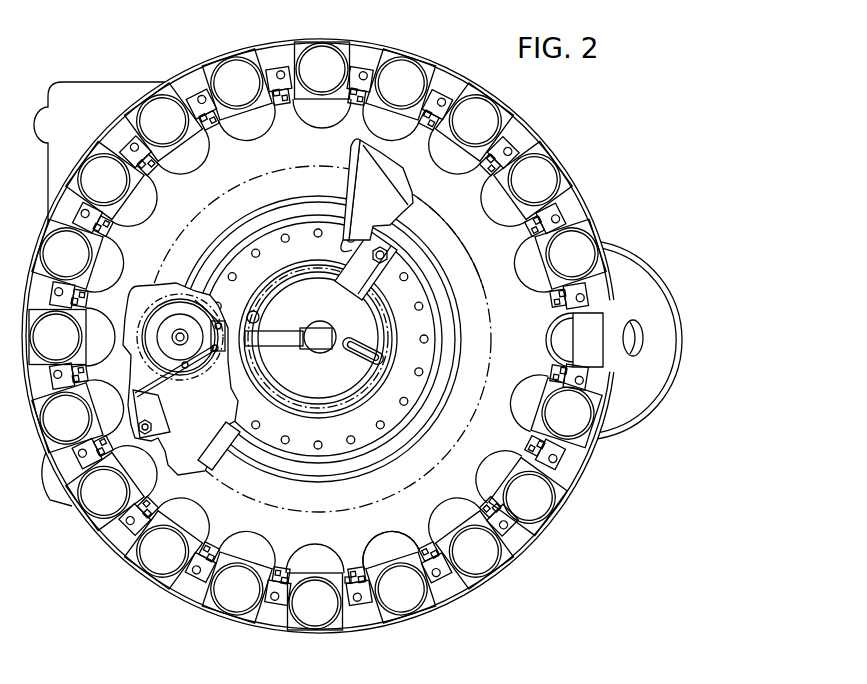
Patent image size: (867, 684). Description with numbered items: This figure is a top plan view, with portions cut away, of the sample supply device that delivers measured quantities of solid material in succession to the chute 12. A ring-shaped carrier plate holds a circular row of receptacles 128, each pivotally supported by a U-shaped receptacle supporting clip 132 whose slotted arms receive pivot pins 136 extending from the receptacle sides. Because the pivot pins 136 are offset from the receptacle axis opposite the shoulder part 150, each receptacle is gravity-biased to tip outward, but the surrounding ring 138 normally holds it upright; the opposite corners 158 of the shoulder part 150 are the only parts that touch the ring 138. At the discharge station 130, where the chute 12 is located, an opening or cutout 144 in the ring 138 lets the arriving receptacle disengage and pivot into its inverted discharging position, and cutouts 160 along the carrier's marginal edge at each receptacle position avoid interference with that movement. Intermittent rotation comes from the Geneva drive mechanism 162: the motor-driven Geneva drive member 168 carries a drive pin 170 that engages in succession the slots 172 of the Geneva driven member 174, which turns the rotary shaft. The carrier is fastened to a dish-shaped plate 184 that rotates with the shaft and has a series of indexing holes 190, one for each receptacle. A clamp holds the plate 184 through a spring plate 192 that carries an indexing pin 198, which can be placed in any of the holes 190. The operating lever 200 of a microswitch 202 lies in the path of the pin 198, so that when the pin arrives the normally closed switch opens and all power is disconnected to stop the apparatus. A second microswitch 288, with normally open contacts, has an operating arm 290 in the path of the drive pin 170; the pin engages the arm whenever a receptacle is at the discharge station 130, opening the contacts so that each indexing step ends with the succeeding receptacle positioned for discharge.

The chute 12 is at (652, 418).
The receptacle 128 is at (522, 180).
The discharge station 130 is at (670, 318).
The receptacle supporting clip 132 is at (215, 556).
The pivot pin 136 is at (349, 572).
The ring 138 is at (134, 566).
The opening or cutout 144 is at (608, 300).
The shoulder part 150 is at (557, 492).
The opposite corners 158 is at (506, 549).
The cutout 160 is at (378, 539).
The Geneva drive mechanism 162 is at (175, 318).
The Geneva drive member 168 is at (160, 323).
The drive pin 170 is at (198, 362).
The slot 172 is at (180, 379).
The Geneva driven member 174 is at (212, 352).
The dish-shaped plate 184 is at (327, 482).
The indexing hole 190 is at (291, 441).
The spring plate 192 is at (381, 370).
The indexing pin 198 is at (402, 230).
The operating lever 200 is at (347, 187).
The microswitch 202 is at (381, 190).
The microswitch 288 is at (162, 475).
The operating arm 290 is at (140, 378).